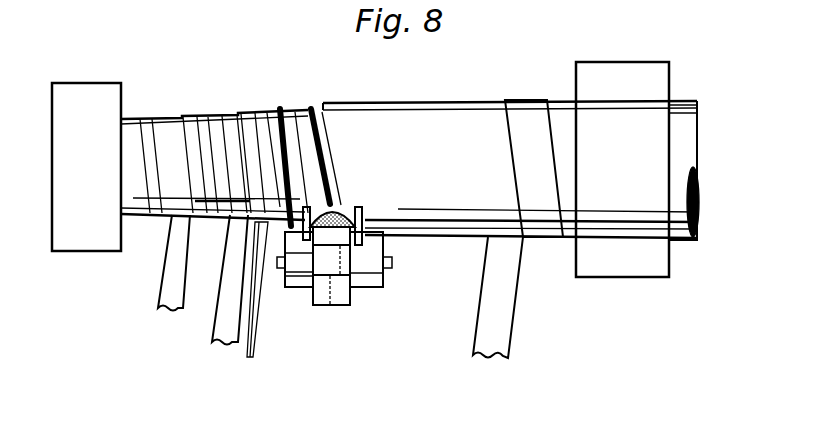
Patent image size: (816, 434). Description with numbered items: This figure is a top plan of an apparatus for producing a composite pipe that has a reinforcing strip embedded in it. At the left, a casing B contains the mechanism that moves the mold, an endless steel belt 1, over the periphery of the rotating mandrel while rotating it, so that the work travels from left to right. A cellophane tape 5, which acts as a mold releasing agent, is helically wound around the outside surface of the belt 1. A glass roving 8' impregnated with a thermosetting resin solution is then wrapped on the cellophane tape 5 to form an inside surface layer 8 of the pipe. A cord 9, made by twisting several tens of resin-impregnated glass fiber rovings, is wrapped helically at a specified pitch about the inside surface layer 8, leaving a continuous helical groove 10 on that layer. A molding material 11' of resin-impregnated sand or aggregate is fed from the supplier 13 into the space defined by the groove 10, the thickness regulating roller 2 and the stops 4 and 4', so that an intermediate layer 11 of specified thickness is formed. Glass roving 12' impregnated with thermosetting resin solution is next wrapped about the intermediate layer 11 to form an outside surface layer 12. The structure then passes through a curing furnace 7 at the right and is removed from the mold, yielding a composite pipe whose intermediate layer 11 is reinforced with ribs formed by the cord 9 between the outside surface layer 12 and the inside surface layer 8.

The casing B is at (88, 90).
The endless steel belt 1 is at (157, 118).
The thickness regulating roller 2 is at (383, 273).
The stop 4 is at (295, 285).
The stop 4' is at (351, 215).
The cellophane tape 5 is at (168, 310).
The curing furnace 7 is at (645, 278).
The inside surface layer 8 is at (262, 170).
The glass roving 8' is at (224, 309).
The cord 9 is at (278, 108).
The helical groove 10 is at (298, 108).
The intermediate layer 11 is at (511, 170).
The molding material 11' is at (348, 183).
The outside surface layer 12 is at (534, 168).
The glass roving 12' is at (503, 321).
The supplier 13 is at (348, 265).